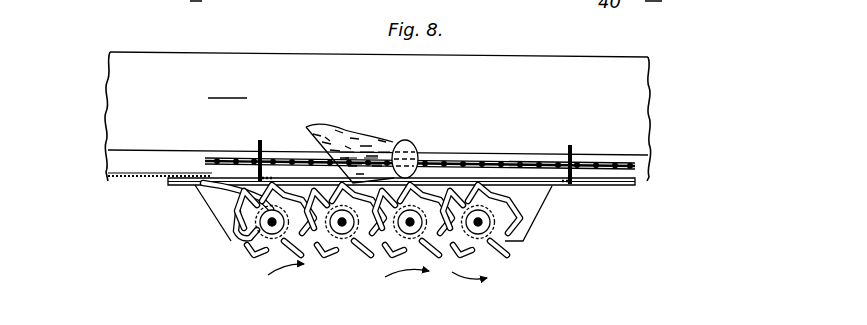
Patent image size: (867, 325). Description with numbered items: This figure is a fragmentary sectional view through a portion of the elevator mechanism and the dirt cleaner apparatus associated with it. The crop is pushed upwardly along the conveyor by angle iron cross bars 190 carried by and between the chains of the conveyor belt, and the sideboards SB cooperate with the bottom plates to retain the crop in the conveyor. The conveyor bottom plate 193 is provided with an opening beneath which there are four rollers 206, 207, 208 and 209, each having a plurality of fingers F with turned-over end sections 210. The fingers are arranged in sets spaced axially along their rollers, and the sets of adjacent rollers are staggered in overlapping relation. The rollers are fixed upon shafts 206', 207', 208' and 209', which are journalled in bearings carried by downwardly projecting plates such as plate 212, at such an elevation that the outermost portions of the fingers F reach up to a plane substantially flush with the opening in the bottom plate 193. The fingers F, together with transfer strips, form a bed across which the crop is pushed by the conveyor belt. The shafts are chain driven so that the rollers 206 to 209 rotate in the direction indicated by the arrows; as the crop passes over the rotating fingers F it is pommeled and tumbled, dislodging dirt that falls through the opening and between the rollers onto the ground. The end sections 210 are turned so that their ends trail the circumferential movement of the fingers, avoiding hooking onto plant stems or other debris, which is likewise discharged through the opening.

The sideboards SB is at (227, 88).
The angle iron cross bars 190 is at (423, 142).
The second bottom plate 193 is at (128, 179).
The fingers F is at (231, 247).
The turned-over end sections 210 is at (236, 224).
The downwardly projecting plate 212 is at (532, 214).
The roller 206 is at (275, 244).
The shaft 206' is at (232, 266).
The roller 207 is at (345, 249).
The shaft 207' is at (317, 274).
The roller 208 is at (413, 244).
The shaft 208' is at (382, 259).
The roller 209 is at (518, 258).
The shaft 209' is at (489, 244).